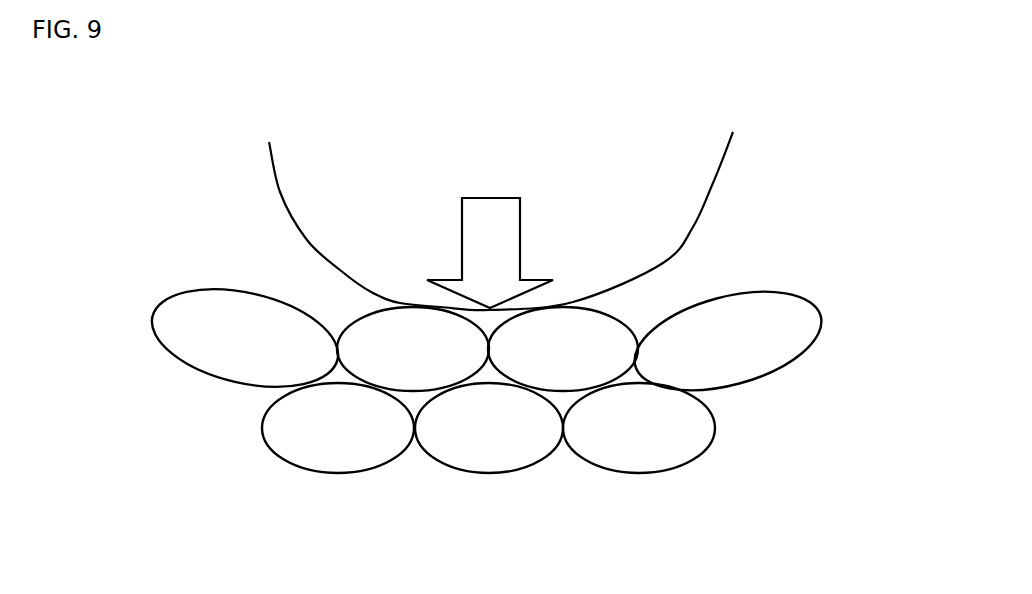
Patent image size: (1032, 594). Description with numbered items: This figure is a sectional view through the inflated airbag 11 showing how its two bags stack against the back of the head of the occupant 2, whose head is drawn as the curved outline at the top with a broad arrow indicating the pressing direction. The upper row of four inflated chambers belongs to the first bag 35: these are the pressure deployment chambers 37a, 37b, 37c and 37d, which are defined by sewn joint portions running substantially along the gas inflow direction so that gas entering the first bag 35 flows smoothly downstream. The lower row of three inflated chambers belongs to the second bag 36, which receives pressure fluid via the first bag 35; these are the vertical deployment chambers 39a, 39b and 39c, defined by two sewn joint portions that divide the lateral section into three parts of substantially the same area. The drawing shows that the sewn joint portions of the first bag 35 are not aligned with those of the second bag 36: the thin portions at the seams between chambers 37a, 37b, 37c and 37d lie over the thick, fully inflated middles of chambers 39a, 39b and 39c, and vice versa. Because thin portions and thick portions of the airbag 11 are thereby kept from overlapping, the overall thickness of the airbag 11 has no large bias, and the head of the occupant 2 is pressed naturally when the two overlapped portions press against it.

The occupant 2 is at (278, 190).
The airbag 11 is at (125, 292).
The first bag 35 is at (524, 326).
The second bag 36 is at (521, 471).
The pressure deployment chamber 37a is at (237, 353).
The pressure deployment chamber 37b is at (365, 335).
The pressure deployment chamber 37c is at (593, 333).
The pressure deployment chamber 37d is at (757, 315).
The vertical deployment chamber 39a is at (318, 450).
The vertical deployment chamber 39b is at (488, 450).
The vertical deployment chamber 39c is at (628, 462).